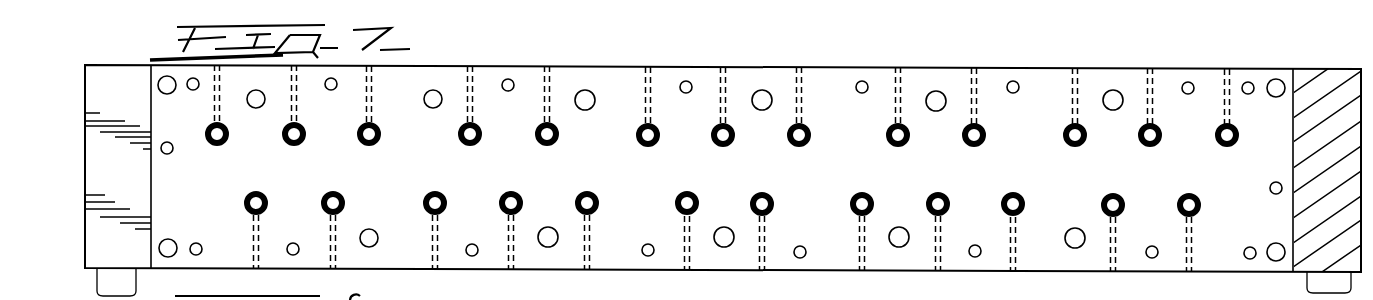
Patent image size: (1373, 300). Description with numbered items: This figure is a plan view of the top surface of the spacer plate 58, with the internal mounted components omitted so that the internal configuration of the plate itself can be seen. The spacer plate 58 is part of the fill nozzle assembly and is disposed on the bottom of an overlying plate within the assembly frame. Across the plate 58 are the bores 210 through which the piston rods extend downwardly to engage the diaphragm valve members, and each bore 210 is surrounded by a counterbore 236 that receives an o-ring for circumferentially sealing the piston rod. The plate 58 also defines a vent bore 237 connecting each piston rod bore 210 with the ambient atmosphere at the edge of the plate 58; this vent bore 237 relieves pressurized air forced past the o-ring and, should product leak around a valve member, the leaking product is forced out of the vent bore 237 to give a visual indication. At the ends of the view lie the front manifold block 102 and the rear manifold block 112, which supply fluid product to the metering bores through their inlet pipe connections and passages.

The spacer plate 58 is at (609, 57).
The front manifold block 102 is at (121, 83).
The rear manifold block 112 is at (1317, 88).
The vent bore 237 is at (645, 85).
The counterbore 236 is at (636, 130).
The bore 210 is at (642, 140).